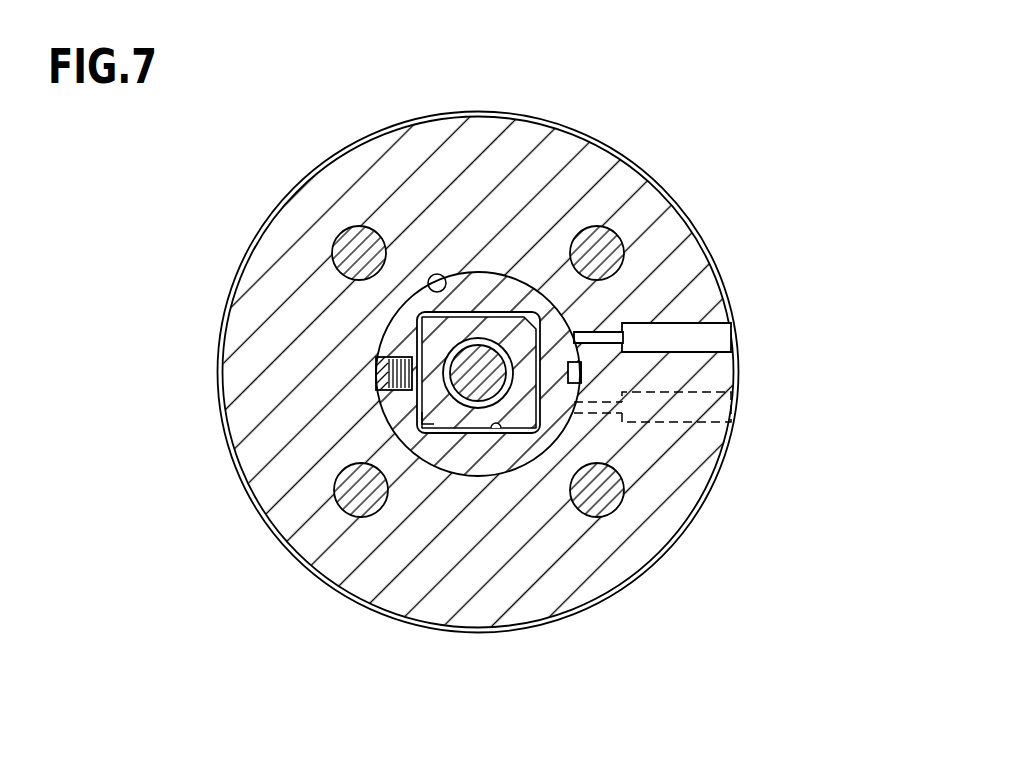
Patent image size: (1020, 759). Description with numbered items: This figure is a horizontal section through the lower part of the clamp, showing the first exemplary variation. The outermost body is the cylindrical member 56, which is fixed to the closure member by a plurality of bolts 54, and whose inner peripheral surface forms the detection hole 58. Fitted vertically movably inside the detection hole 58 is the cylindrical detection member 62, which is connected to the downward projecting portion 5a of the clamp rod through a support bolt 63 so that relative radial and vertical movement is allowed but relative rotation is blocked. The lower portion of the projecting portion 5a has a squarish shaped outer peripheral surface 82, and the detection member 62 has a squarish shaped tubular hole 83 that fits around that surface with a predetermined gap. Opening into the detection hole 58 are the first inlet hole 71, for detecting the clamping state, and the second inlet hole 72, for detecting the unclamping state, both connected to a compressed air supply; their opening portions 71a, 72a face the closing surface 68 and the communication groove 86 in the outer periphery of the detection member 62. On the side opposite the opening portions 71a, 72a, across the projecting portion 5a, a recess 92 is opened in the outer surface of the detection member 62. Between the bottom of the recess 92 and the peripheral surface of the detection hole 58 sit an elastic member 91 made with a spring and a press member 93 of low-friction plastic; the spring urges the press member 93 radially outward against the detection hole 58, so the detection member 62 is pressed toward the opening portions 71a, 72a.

The cylindrical member 56 is at (608, 141).
The bolts 54 is at (347, 248).
The detection hole 58 is at (427, 280).
The support bolt 63 is at (458, 360).
The press member 93 is at (375, 357).
The elastic member 91 is at (377, 377).
The recess 92 is at (412, 405).
The squarish shaped outer peripheral surface 82 is at (462, 433).
The squarish shaped tubular hole 83 is at (503, 433).
The projecting portion 5a is at (426, 424).
The detection member 62 is at (533, 468).
The second inlet hole 72 is at (677, 323).
The opening portion 72a is at (594, 330).
The communication groove 86 is at (581, 372).
The closing surface 68 is at (582, 390).
The first inlet hole 71 is at (677, 423).
The opening portion 71a is at (593, 420).